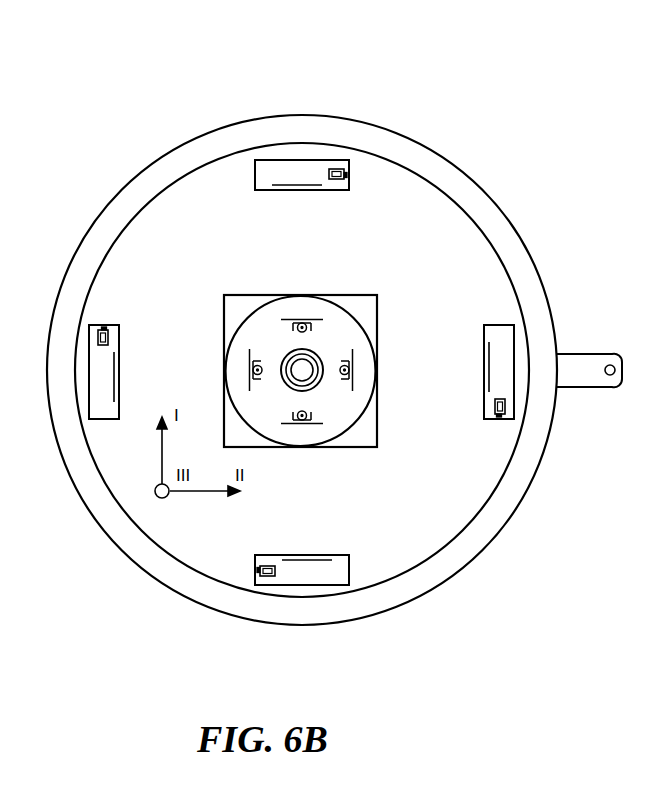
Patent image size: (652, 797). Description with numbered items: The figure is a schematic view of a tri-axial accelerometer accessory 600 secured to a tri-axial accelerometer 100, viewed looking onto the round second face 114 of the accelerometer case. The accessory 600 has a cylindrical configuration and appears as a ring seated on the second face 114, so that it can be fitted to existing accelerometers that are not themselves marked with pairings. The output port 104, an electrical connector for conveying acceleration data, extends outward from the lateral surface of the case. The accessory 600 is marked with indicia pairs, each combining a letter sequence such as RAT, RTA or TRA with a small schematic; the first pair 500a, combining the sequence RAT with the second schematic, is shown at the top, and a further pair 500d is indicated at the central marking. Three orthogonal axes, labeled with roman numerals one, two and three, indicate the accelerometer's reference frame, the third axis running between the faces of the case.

The tri-axial accelerometer 100 is at (337, 356).
The output port 104 is at (590, 362).
The second face 114 is at (102, 505).
The first pair 500a is at (297, 160).
The pair 500d is at (303, 447).
The tri-axial accelerometer accessory 600 is at (181, 178).